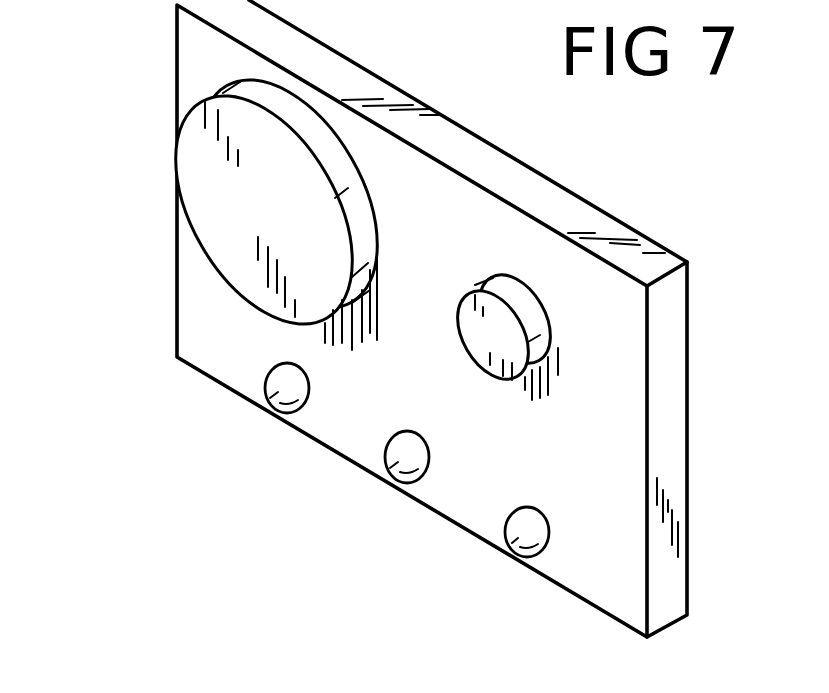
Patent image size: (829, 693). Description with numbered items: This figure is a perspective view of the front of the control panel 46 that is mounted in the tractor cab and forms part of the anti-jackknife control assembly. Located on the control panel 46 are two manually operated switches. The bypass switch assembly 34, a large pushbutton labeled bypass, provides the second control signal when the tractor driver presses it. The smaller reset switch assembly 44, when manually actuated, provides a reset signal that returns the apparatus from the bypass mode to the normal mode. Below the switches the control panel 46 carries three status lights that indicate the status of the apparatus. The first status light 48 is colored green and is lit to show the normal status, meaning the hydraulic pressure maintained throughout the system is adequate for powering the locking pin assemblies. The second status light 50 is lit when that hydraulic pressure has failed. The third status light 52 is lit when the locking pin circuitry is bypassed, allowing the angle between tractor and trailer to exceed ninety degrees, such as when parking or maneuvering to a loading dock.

The bypass switch assembly 34 is at (257, 143).
The reset switch assembly 44 is at (533, 323).
The control panel 46 is at (587, 215).
The first status light 48 is at (276, 402).
The second status light 50 is at (398, 468).
The third status light 52 is at (518, 544).